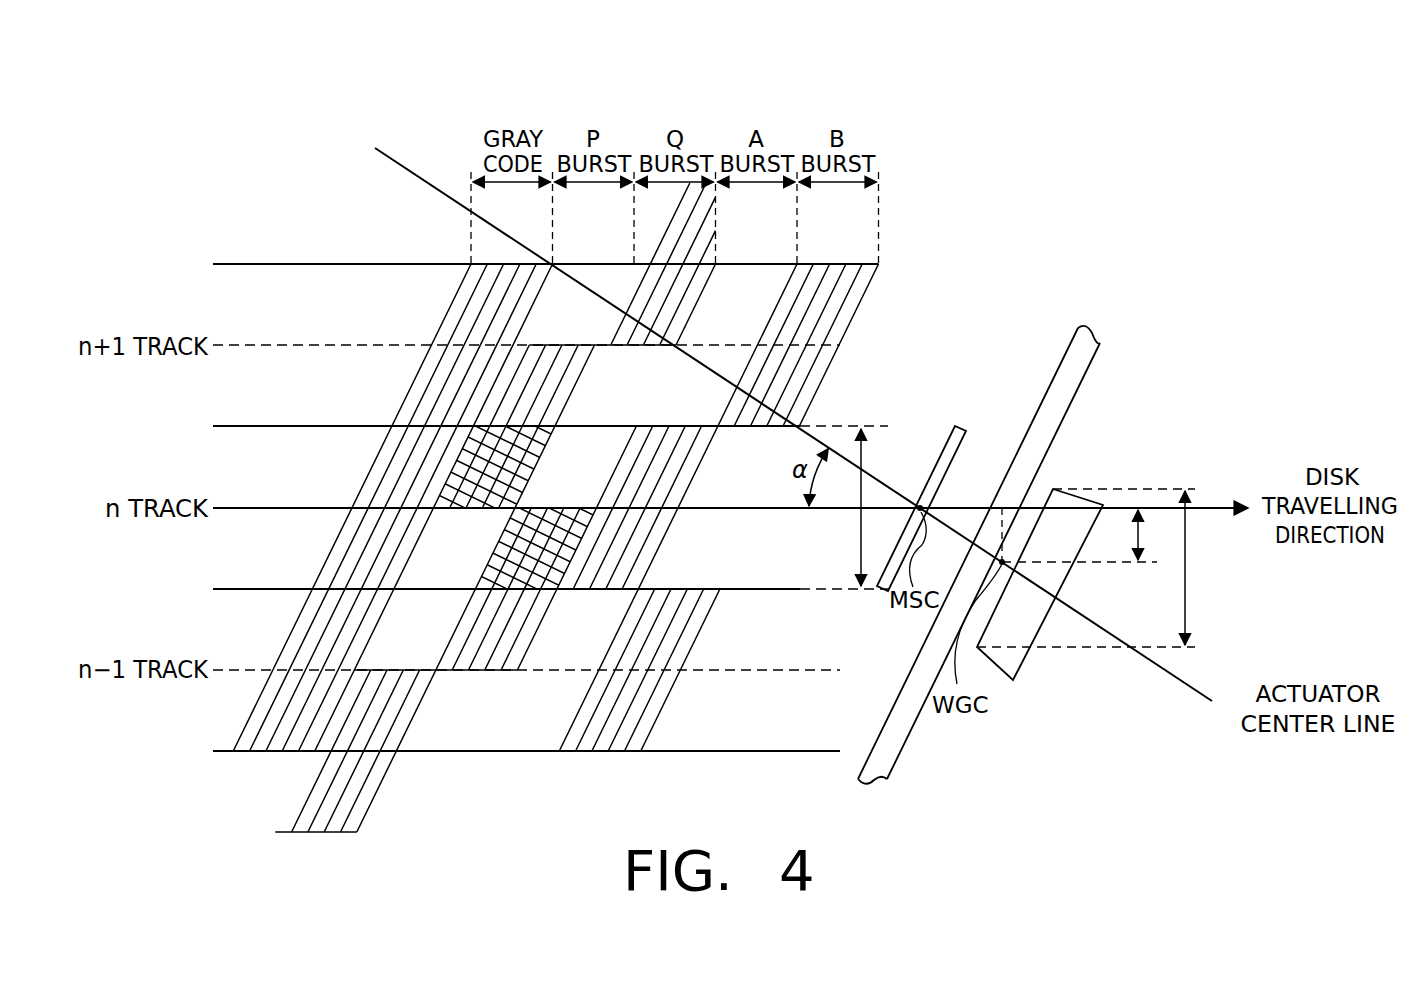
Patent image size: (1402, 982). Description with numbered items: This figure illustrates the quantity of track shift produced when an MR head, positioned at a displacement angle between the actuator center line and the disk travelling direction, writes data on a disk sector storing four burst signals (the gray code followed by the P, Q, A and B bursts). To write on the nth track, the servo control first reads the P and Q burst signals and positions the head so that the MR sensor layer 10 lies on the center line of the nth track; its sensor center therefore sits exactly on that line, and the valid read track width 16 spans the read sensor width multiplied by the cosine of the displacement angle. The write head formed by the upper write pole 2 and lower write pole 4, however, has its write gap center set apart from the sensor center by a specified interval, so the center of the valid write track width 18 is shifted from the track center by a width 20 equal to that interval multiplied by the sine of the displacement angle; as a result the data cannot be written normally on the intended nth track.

The upper write pole 2 is at (1010, 665).
The lower write pole 4 is at (1073, 374).
The MR sensor layer 10 is at (957, 427).
The valid read track width 16 is at (858, 529).
The valid write track width 18 is at (1203, 568).
The difference 20 is at (1157, 535).